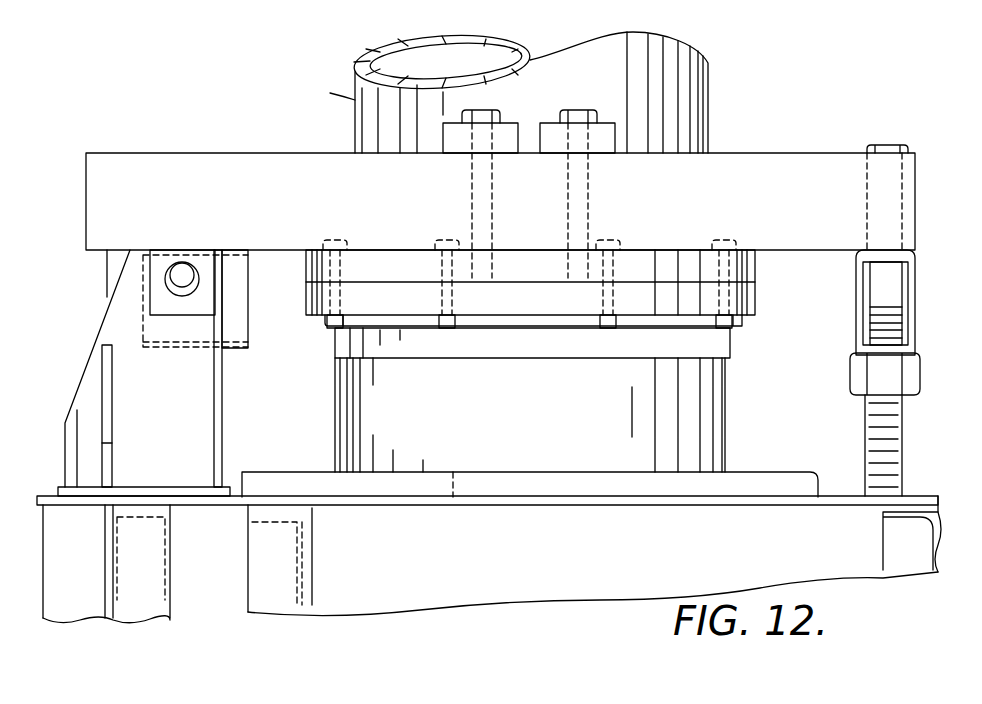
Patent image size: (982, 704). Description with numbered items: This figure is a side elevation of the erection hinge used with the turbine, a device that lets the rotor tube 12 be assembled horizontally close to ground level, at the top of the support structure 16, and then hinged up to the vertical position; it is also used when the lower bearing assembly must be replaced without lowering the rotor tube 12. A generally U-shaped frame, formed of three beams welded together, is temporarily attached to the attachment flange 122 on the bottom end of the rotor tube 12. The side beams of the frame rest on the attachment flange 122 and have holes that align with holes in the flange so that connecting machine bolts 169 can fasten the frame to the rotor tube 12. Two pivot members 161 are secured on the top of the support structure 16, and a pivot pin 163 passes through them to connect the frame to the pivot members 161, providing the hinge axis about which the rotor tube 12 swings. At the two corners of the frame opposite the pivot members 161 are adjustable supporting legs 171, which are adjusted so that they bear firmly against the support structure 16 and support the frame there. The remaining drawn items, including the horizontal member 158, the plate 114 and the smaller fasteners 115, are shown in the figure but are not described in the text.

The rotor tube 12 is at (352, 100).
The top clamping plate 158 is at (162, 153).
The connecting machine bolts 169 is at (578, 110).
The attachment flange 122 is at (390, 268).
The bolts 115 is at (610, 243).
The plate 114 is at (531, 327).
The pivot pin 163 is at (181, 274).
The pivot members 161 is at (87, 367).
The adjustable supporting legs 171 is at (867, 432).
The support structure 16 is at (883, 545).